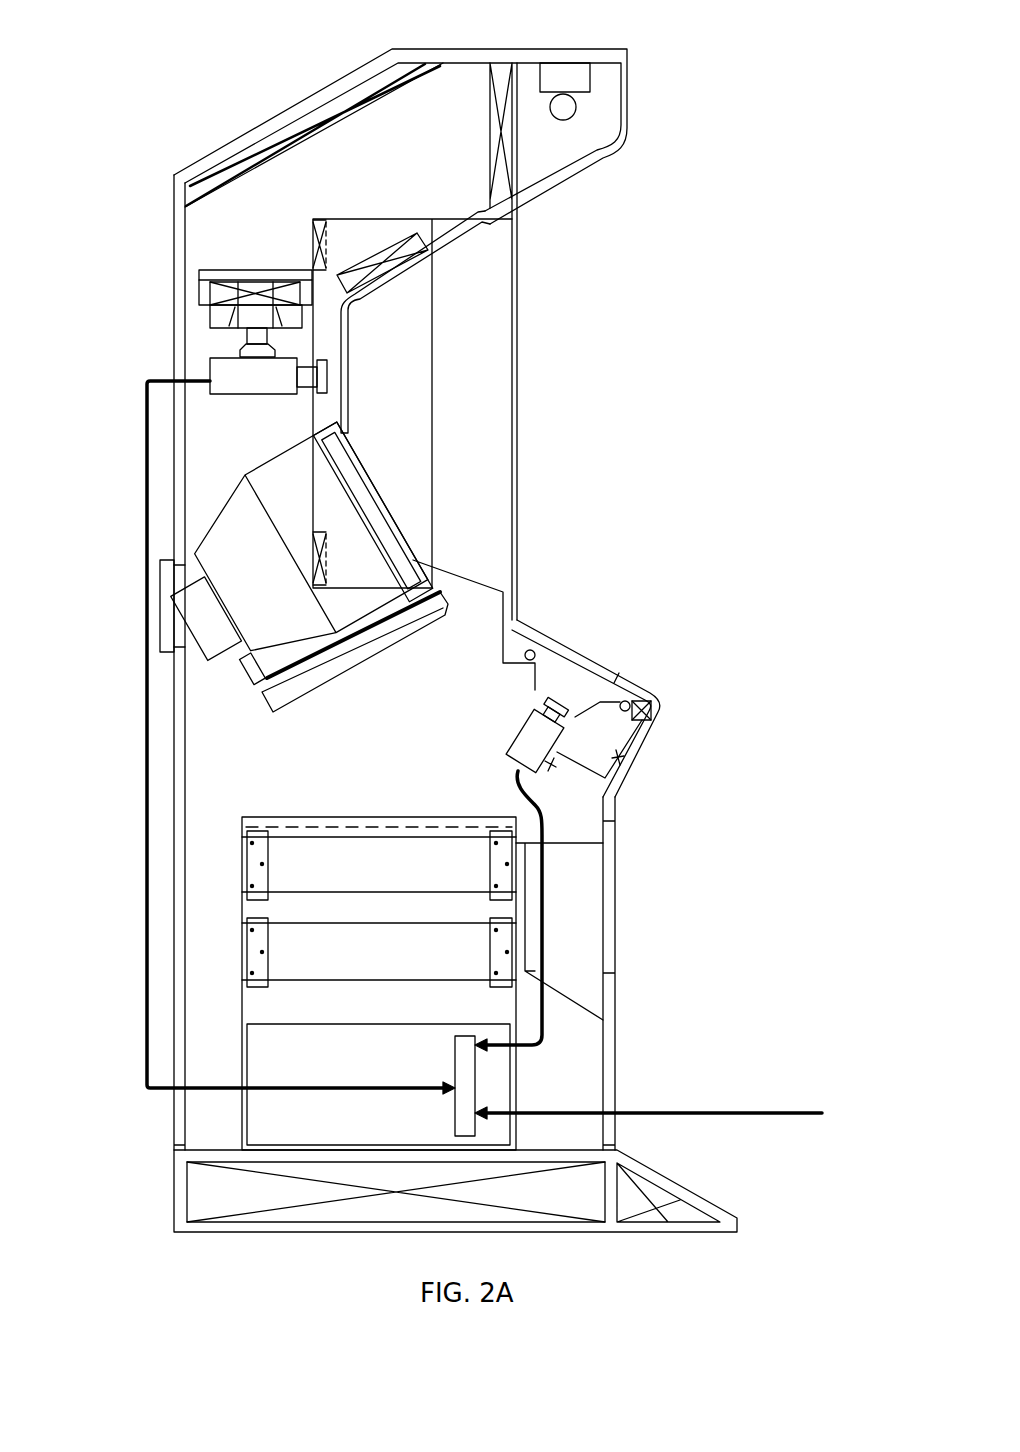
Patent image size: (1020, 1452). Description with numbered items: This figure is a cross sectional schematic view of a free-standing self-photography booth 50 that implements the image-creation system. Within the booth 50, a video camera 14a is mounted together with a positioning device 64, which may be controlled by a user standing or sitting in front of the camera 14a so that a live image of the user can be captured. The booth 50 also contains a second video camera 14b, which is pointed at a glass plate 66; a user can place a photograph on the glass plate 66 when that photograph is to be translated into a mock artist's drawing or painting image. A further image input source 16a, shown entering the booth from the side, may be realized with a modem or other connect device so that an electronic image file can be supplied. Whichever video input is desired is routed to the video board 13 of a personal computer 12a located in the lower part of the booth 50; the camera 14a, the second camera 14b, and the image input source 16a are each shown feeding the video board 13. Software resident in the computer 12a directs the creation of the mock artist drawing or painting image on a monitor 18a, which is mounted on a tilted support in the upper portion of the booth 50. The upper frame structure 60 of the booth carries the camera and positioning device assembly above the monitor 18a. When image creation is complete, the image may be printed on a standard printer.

The booth 50 is at (666, 72).
The upper support frame / tube 60 is at (573, 48).
The positioning device 64 is at (238, 270).
The video camera 14a is at (210, 365).
The monitor 18a is at (272, 578).
The second video camera 14b is at (510, 733).
The glass plate 66 is at (620, 687).
The personal computer 12a is at (351, 1124).
The video board 13 is at (463, 1137).
The image input source 16a is at (770, 1113).